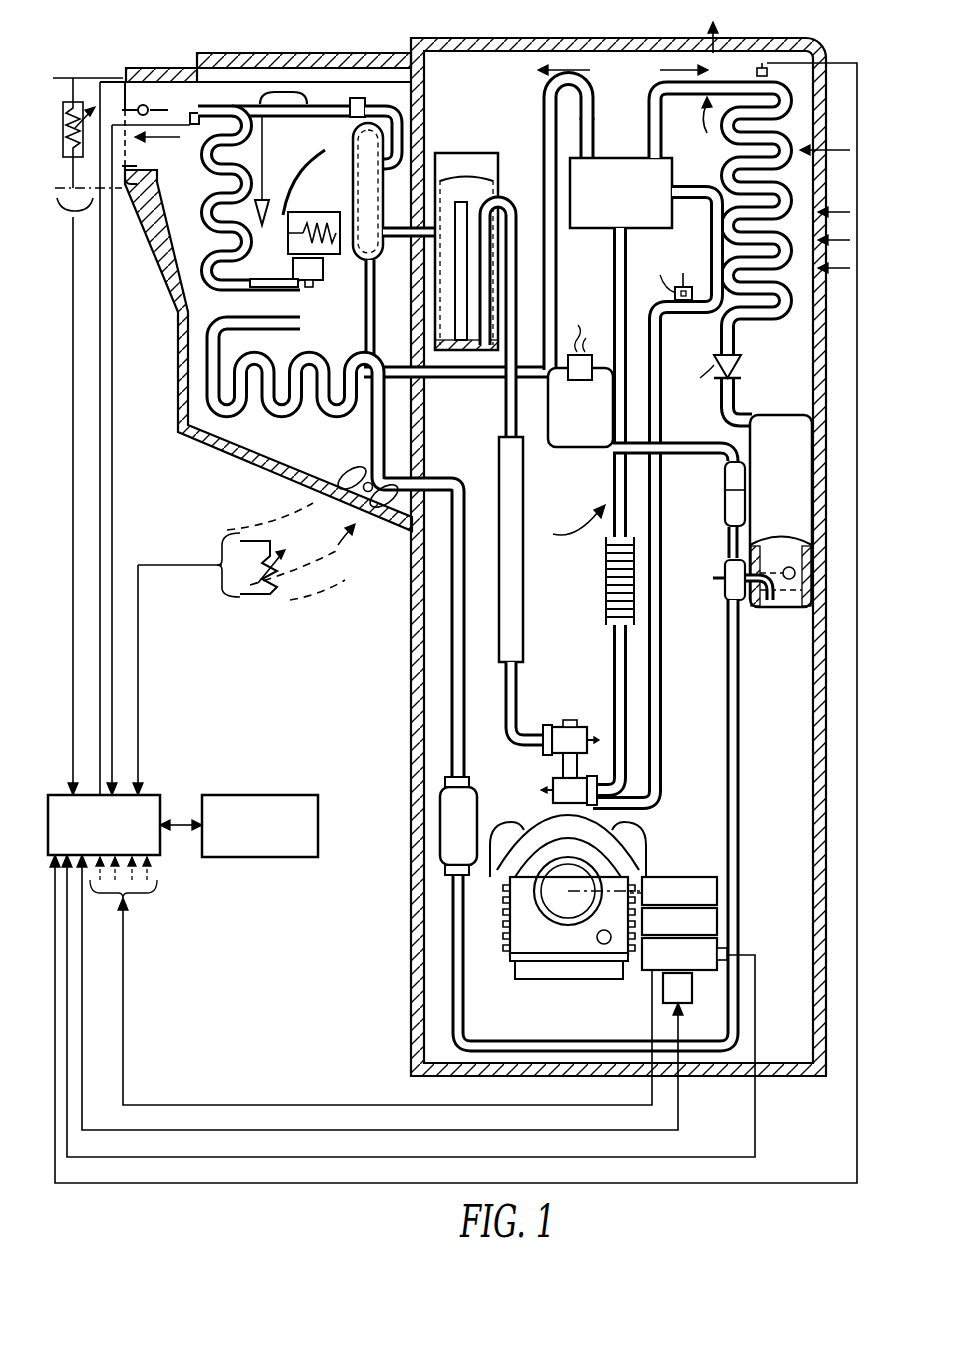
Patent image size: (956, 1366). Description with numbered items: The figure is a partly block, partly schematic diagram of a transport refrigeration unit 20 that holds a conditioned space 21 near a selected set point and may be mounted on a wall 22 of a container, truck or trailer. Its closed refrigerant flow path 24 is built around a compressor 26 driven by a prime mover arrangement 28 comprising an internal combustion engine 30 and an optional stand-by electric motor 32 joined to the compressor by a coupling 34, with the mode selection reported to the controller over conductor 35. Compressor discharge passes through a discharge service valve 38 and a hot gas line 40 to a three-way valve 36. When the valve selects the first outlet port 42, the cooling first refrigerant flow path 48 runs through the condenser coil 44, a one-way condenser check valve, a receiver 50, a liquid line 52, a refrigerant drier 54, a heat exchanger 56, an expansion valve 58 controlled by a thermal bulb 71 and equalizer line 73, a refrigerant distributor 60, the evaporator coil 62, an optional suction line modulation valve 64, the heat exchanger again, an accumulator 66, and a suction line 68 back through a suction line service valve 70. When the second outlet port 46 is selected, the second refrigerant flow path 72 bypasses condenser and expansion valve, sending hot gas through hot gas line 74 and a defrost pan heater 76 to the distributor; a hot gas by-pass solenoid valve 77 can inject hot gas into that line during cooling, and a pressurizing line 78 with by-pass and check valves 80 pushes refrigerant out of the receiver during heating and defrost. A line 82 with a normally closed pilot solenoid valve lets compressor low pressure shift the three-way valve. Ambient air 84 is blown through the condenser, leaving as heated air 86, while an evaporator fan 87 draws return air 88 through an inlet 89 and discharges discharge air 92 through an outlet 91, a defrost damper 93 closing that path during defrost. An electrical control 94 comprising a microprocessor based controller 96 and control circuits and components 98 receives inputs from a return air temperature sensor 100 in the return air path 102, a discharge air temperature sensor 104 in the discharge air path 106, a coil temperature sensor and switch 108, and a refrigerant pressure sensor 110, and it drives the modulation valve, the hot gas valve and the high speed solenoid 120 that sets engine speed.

The refrigeration unit 20 is at (395, 1213).
The conditioned space 21 is at (250, 510).
The wall 22 is at (426, 117).
The refrigerant flow path 24 is at (569, 526).
The refrigerant compressor 26 is at (510, 925).
The prime mover arrangement 28 is at (421, 999).
The internal combustion engine 30 is at (640, 968).
The stand-by electric motor 32 is at (717, 893).
The clutch or coupling 34 is at (717, 921).
The conductor 35 is at (728, 953).
The three-way valve 36 is at (630, 133).
The discharge service valve 38 is at (562, 784).
The hot gas line 40 is at (611, 460).
The first outlet port 42 is at (663, 157).
The condenser coil 44 is at (800, 245).
The second outlet port 46 is at (575, 150).
The first refrigerant flow path 48 is at (662, 71).
The receiver 50 is at (768, 613).
The liquid line 52 is at (745, 713).
The refrigerant drier 54 is at (455, 813).
The heat exchanger 56 is at (383, 258).
The expansion valve 58 is at (293, 283).
The refrigerant distributor 60 is at (375, 306).
The evaporator coil 62 is at (183, 228).
The suction line modulation valve 64 is at (360, 100).
The accumulator 66 is at (457, 153).
The suction line 68 is at (500, 415).
The suction line service valve 70 is at (567, 735).
The thermal bulb 71 is at (293, 92).
The second refrigerant flow path 72 is at (580, 72).
The equalizer line 73 is at (310, 178).
The hot gas line 74 is at (551, 268).
The defrost pan heater 76 is at (287, 417).
The hot gas by-pass solenoid valve 77 is at (590, 355).
The by-pass or pressurizing line 78 is at (606, 440).
The by-pass and check valves 80 is at (725, 505).
The conduit or line 82 is at (661, 525).
The ambient air 84 is at (848, 208).
The heated air 86 is at (710, 27).
The evaporator fan or blower 87 is at (345, 478).
The return air 88 is at (340, 548).
The inlet 89 is at (313, 503).
The outlet 91 is at (127, 186).
The discharge air 92 is at (180, 141).
The defrost damper 93 is at (143, 104).
The electrical control 94 is at (188, 822).
The microprocessor based controller 96 is at (153, 795).
The electrical control circuits and components 98 is at (278, 795).
The temperature sensor 100 is at (273, 594).
The return air path 102 is at (357, 540).
The temperature sensor 104 is at (90, 106).
The discharge air path 106 is at (55, 78).
The coil temperature sensor and switch 108 is at (193, 112).
The refrigerant pressure sensor (HPCO) 110 is at (762, 65).
The throttle or high speed solenoid 120 is at (700, 990).